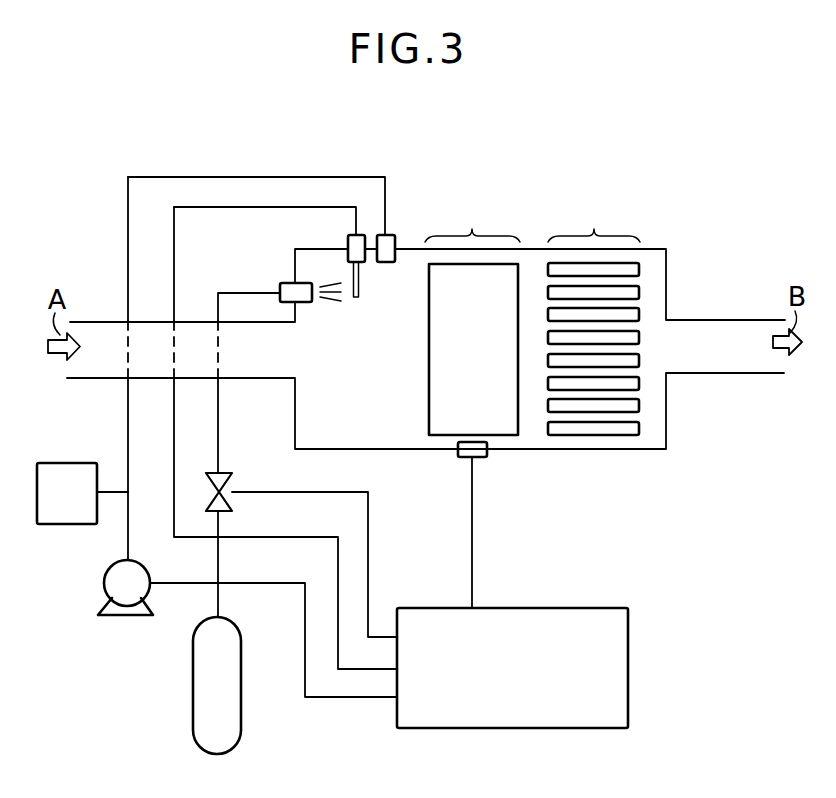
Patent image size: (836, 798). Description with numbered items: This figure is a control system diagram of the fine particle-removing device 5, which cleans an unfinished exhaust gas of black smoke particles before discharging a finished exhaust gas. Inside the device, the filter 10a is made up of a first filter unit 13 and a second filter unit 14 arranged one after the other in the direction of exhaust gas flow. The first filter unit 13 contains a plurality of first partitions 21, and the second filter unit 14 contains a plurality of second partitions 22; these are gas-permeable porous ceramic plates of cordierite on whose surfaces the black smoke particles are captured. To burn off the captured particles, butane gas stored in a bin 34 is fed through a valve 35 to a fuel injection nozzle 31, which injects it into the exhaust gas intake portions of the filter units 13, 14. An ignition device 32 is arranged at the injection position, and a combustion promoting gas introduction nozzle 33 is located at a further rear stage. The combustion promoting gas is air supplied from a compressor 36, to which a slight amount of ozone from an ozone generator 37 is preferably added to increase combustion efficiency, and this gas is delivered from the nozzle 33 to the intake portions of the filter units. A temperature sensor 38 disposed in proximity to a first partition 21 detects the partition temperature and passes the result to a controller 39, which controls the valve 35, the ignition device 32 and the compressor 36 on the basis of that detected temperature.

The fine particle-removing device 5 is at (652, 208).
The filter 10a is at (532, 224).
The first filter unit 13 is at (472, 219).
The second filter unit 14 is at (594, 219).
The first partitions 21 is at (432, 372).
The second partitions 22 is at (622, 432).
The fuel injection nozzle 31 is at (280, 285).
The ignition device 32 is at (352, 274).
The combustion promoting gas introduction nozzle 33 is at (396, 239).
The bin 34 is at (193, 687).
The valve 35 is at (230, 477).
The compressor 36 is at (104, 583).
The ozone generator 37 is at (68, 463).
The temperature sensor 38 is at (457, 457).
The controller 39 is at (628, 632).